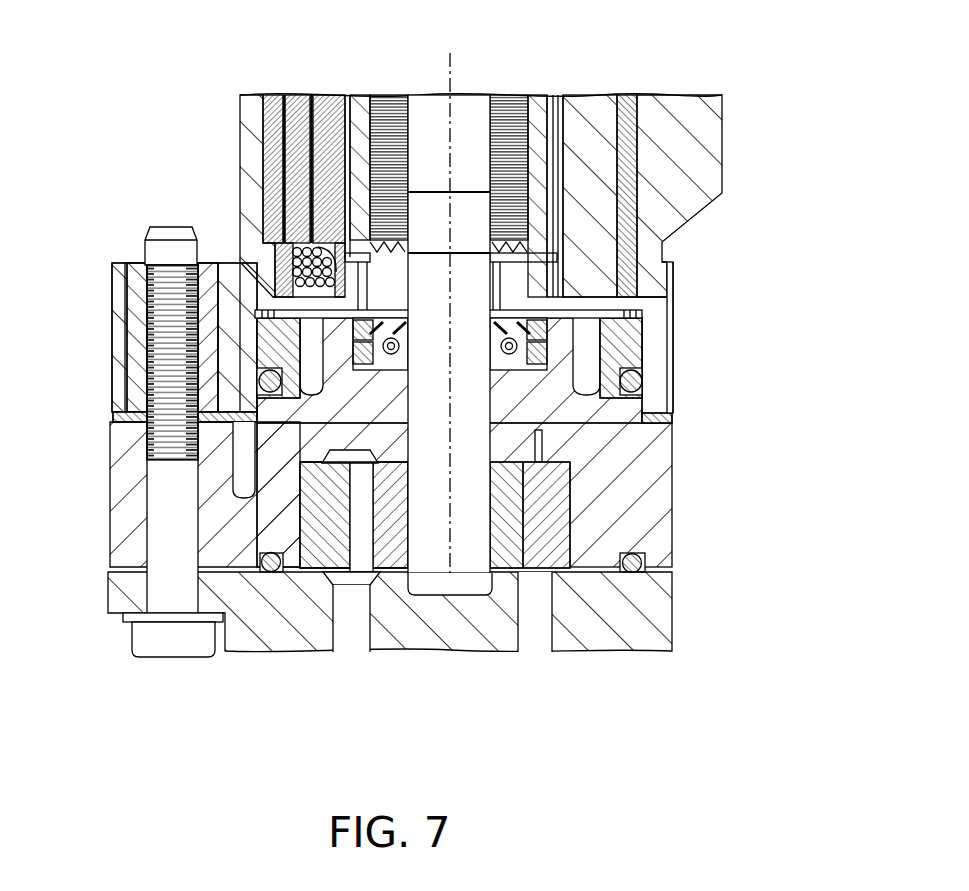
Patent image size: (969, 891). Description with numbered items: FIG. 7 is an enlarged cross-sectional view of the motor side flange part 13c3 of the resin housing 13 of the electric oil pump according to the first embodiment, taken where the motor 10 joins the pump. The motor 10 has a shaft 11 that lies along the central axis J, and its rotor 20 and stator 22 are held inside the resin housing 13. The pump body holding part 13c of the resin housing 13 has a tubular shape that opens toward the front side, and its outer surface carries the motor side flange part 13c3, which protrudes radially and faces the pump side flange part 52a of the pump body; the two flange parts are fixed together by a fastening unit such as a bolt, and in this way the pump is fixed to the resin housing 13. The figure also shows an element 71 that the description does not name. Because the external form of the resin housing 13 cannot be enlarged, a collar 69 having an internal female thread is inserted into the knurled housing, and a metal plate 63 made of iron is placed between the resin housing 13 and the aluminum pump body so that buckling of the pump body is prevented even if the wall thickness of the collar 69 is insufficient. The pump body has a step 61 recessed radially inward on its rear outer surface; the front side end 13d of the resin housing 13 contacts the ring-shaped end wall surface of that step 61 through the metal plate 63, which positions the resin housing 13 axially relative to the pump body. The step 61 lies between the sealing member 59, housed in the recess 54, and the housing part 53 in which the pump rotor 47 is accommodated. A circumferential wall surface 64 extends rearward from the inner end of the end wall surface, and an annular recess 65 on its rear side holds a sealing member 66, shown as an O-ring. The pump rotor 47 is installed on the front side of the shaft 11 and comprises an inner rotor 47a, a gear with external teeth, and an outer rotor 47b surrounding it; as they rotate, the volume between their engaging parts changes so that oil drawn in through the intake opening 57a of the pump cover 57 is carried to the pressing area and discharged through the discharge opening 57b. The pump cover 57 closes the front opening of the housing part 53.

The motor 10 is at (414, 392).
The shaft 11 is at (427, 557).
The resin housing 13 is at (237, 158).
The pump body holding part 13c is at (100, 302).
The motor side flange part 13c3 is at (112, 282).
The front side end 13d is at (230, 347).
The rotor 20 is at (345, 120).
The stator 22 is at (263, 112).
The pump rotor 47 is at (527, 583).
The inner rotor 47a is at (510, 572).
The outer rotor 47b is at (563, 568).
The pump side flange part 52a is at (128, 487).
The housing part 53 is at (547, 480).
The recess 54 is at (547, 357).
The pump cover 57 is at (390, 662).
The intake opening 57a is at (343, 650).
The discharge opening 57b is at (525, 633).
The sealing member 59 is at (547, 337).
The step 61 is at (672, 420).
The metal plate 63 is at (112, 415).
The circumferential wall surface 64 is at (643, 338).
The annular recess 65 is at (638, 382).
The sealing member 66 is at (643, 392).
The collar 69 is at (133, 262).
The bolt 71 is at (163, 527).
The central axis J is at (447, 557).